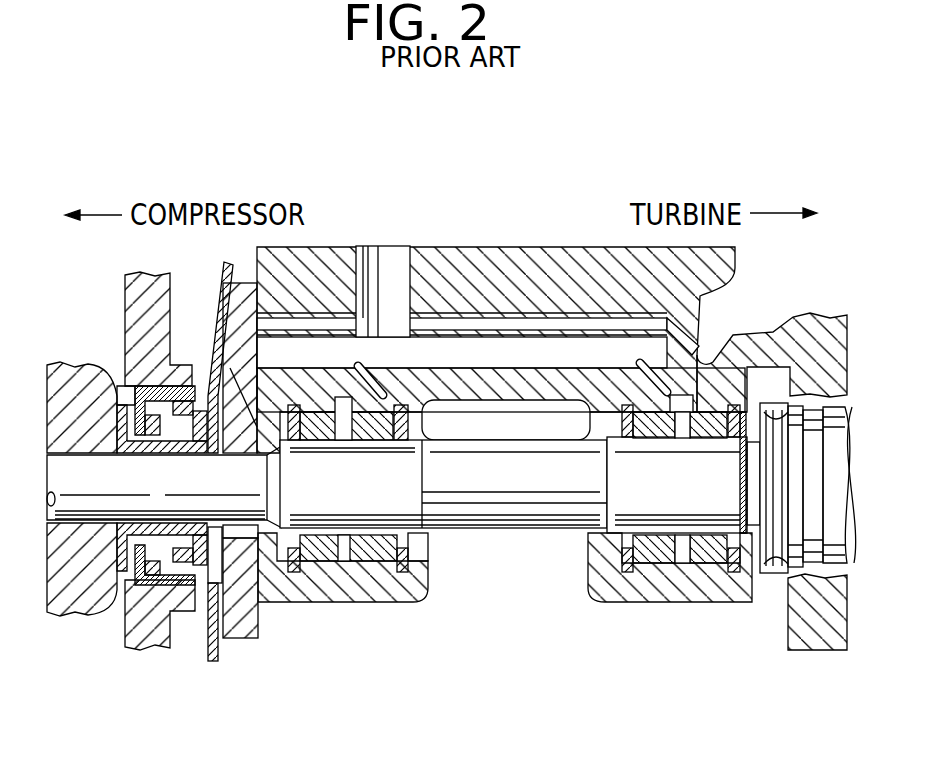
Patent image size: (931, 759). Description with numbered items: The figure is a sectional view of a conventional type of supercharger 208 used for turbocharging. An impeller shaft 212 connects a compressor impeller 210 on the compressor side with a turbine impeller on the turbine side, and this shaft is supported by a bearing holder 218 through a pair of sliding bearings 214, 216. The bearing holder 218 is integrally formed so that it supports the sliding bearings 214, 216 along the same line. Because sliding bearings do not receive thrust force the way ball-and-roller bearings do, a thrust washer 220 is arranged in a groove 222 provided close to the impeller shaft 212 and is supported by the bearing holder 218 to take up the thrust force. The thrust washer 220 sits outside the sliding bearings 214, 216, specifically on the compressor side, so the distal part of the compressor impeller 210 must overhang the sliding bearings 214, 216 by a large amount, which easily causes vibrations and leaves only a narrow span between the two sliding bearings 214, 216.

The supercharger 208 is at (578, 226).
The compressor impeller 210 is at (62, 363).
The impeller shaft 212 is at (522, 507).
The sliding bearing 214 is at (317, 548).
The sliding bearing 216 is at (658, 548).
The bearing holder 218 is at (470, 385).
The thrust washer 220 is at (240, 622).
The groove 222 is at (240, 537).